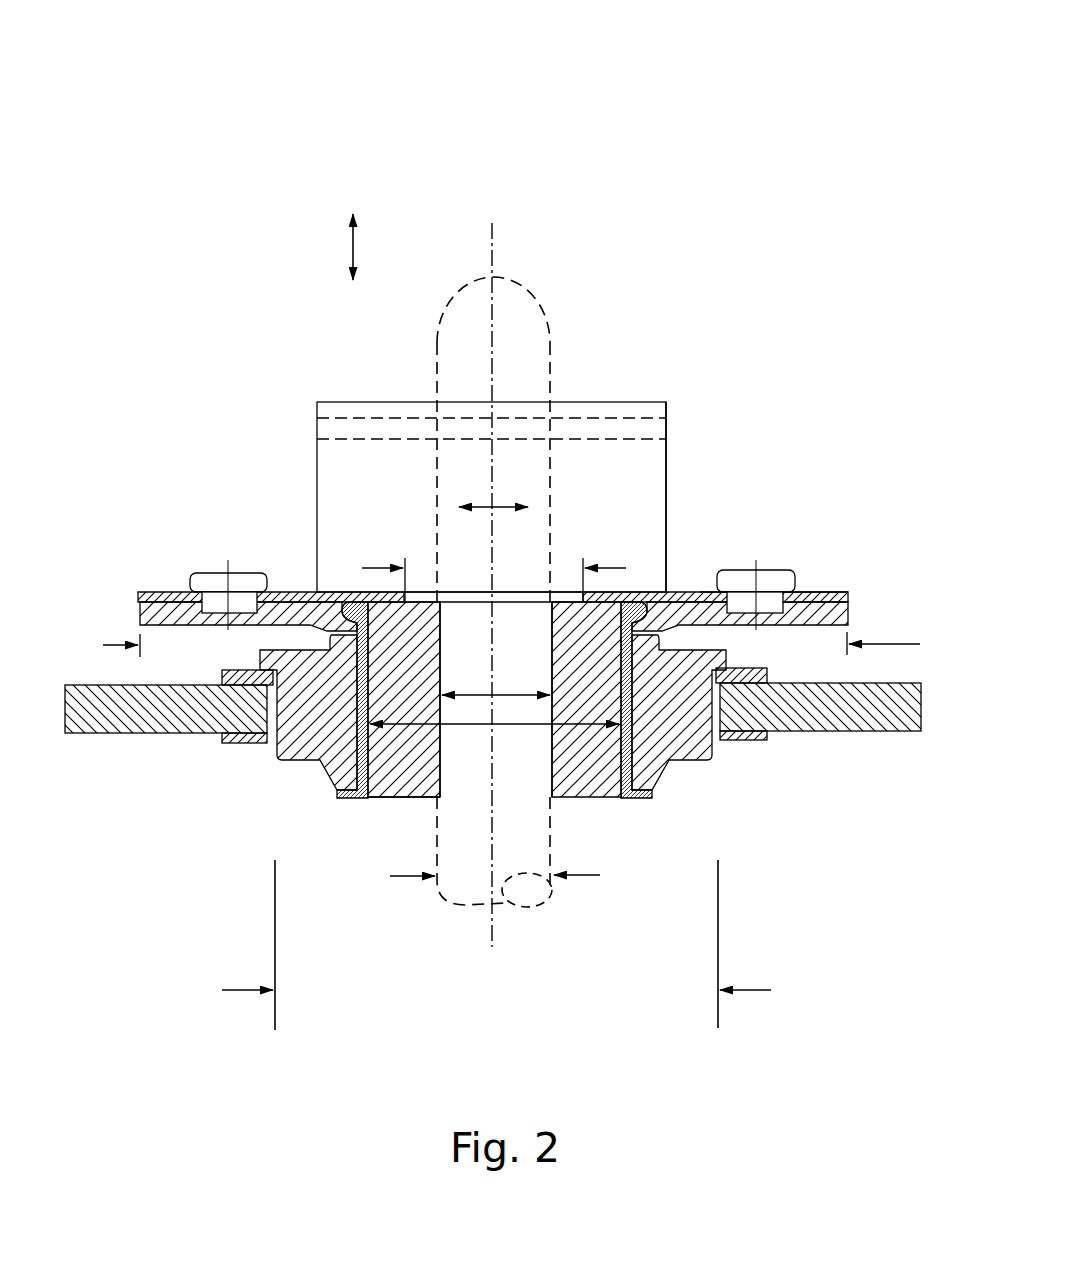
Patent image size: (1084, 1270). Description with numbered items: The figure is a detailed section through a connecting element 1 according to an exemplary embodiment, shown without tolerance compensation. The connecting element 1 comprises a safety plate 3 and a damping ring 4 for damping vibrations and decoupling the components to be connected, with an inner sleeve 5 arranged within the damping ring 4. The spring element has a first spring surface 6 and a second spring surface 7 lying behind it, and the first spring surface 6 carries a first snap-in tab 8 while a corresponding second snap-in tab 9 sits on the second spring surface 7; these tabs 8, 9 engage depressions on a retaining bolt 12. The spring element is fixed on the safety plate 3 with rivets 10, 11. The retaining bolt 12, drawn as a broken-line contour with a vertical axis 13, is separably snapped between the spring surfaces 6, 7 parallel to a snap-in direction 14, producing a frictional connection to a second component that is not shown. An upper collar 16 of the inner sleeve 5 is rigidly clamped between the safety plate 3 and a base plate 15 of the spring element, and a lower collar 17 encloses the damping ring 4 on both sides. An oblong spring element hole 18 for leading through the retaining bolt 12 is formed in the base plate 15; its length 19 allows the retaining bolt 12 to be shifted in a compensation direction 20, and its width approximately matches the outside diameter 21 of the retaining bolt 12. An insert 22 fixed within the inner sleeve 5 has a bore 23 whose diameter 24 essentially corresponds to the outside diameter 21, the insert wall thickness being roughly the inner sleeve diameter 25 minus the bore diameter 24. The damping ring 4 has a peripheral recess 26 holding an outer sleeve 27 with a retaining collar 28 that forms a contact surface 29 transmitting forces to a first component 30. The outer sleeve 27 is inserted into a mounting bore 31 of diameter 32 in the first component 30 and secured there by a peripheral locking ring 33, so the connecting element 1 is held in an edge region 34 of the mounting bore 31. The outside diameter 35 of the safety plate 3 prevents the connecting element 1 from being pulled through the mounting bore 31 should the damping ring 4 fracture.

The connecting element 1 is at (558, 98).
The safety plate 3 is at (840, 612).
The damping ring 4 is at (682, 740).
The inner sleeve 5 is at (590, 797).
The first spring surface 6 is at (669, 498).
The second spring surface 7 is at (307, 397).
The first snap-in tab 8 is at (642, 418).
The second snap-in tab 9 is at (642, 439).
The rivet 10 is at (208, 578).
The rivet 11 is at (770, 577).
The retaining bolt 12 is at (518, 288).
The vertical axis 13 is at (487, 228).
The snap-in direction 14 is at (350, 250).
The base plate 15 is at (827, 592).
The upper collar 16 is at (650, 590).
The lower collar 17 is at (637, 797).
The oblong spring element hole 18 is at (428, 600).
The length of the oblong hole 19 is at (368, 568).
The compensation direction 20 is at (505, 503).
The outside diameter of the retaining bolt 21 is at (587, 875).
The insert 22 is at (393, 797).
The bore 23 is at (545, 797).
The bore diameter 24 is at (523, 692).
The diameter of the inner sleeve 25 is at (455, 725).
The peripheral recess 26 is at (263, 760).
The outer sleeve 27 is at (805, 662).
The retaining collar 28 is at (760, 667).
The contact surface 29 is at (233, 693).
The first component 30 is at (847, 703).
The mounting bore 31 is at (310, 797).
The mounting bore diameter 32 is at (762, 990).
The locking ring 33 is at (750, 737).
The edge region 34 is at (180, 767).
The outside diameter of the safety plate 35 is at (875, 644).